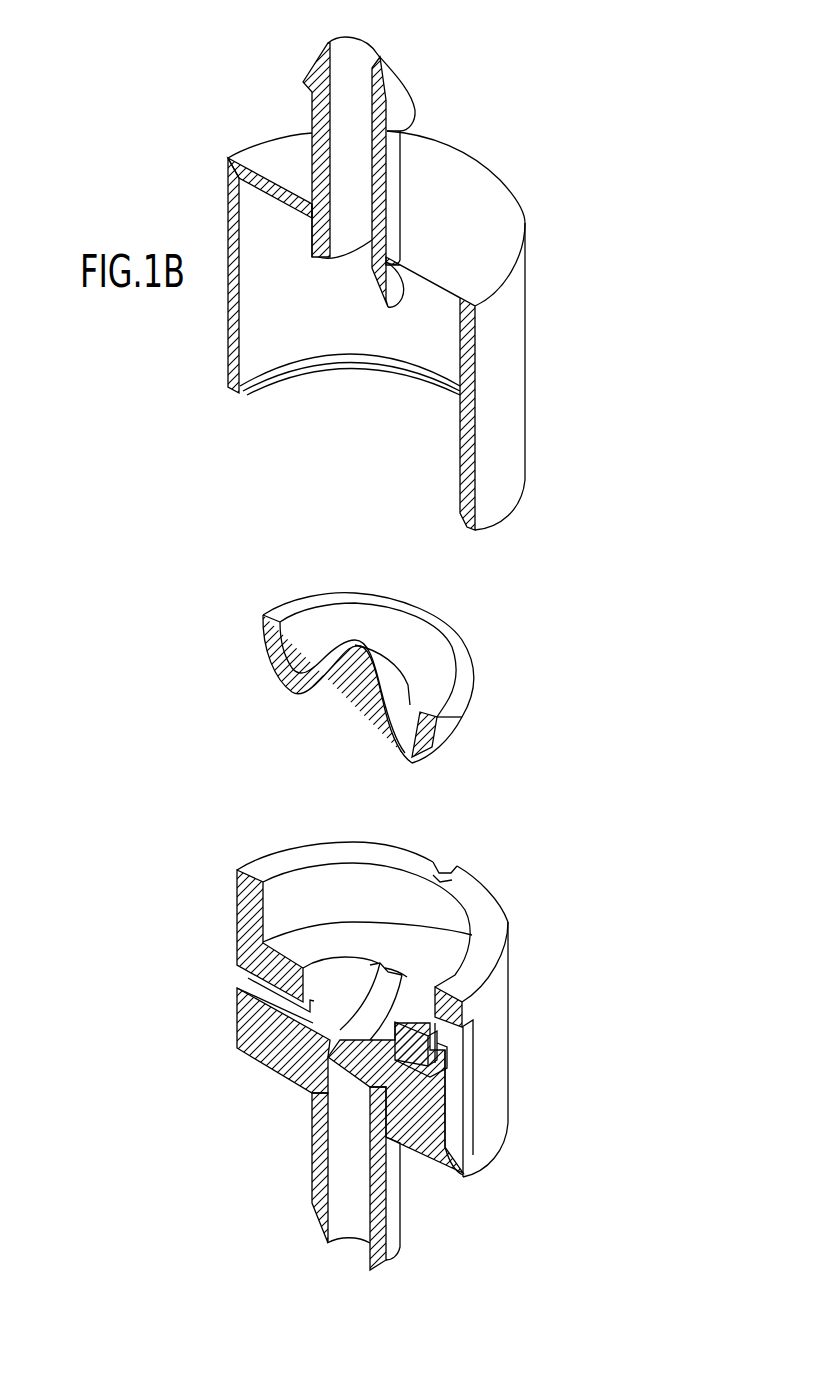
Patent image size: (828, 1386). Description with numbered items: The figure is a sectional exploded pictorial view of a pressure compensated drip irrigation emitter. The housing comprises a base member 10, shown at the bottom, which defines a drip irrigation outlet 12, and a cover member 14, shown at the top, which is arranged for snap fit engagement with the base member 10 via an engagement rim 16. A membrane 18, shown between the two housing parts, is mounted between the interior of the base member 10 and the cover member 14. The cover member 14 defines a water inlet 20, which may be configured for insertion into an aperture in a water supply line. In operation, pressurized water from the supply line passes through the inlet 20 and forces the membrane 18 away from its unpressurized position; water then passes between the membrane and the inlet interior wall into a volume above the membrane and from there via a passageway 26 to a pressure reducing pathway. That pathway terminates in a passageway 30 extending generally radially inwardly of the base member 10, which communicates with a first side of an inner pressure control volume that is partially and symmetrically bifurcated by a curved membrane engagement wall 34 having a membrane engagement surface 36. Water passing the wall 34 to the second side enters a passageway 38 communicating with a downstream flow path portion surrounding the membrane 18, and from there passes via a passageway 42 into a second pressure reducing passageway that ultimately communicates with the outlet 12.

The base member 10 is at (575, 865).
The drip irrigation outlet 12 is at (317, 1135).
The cover member 14 is at (566, 169).
The engagement rim 16 is at (255, 386).
The membrane 18 is at (457, 668).
The water inlet 20 is at (319, 161).
The passageway 26 is at (457, 872).
The passageway 30 is at (262, 1008).
The curved membrane engagement wall 34 is at (417, 1083).
The membrane engagement surface 36 is at (268, 1050).
The passageway 38 is at (408, 1145).
The passageway 42 is at (468, 1053).